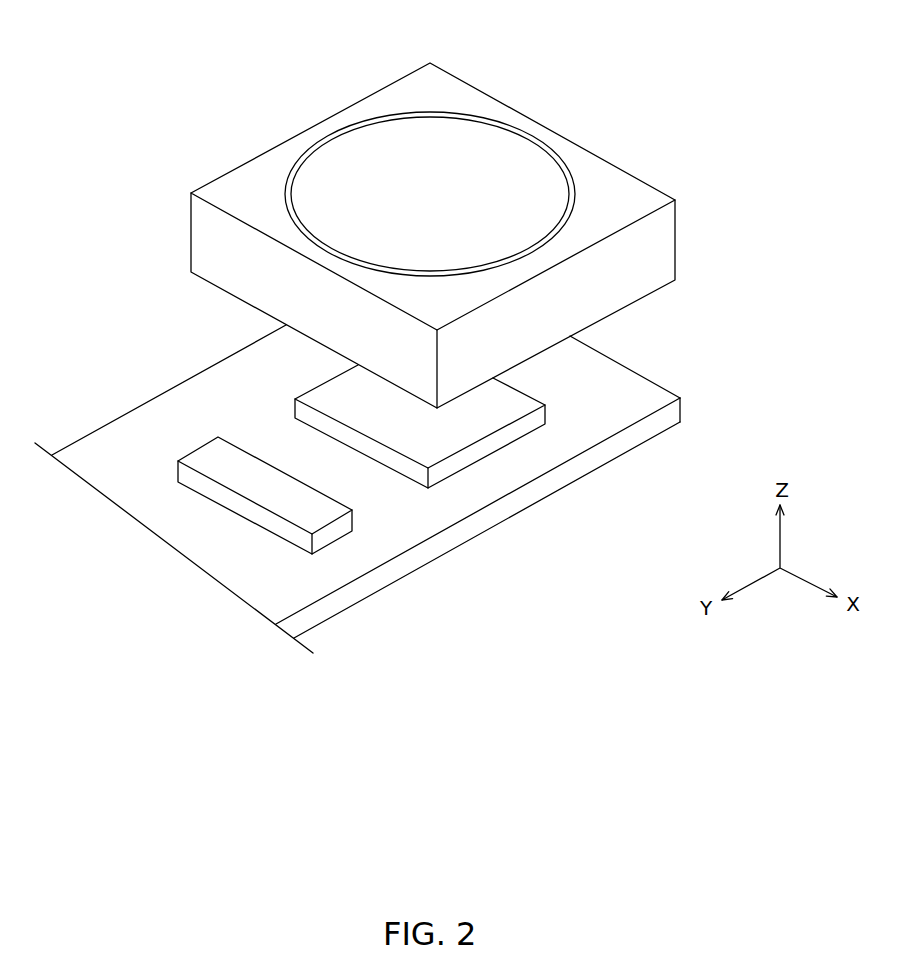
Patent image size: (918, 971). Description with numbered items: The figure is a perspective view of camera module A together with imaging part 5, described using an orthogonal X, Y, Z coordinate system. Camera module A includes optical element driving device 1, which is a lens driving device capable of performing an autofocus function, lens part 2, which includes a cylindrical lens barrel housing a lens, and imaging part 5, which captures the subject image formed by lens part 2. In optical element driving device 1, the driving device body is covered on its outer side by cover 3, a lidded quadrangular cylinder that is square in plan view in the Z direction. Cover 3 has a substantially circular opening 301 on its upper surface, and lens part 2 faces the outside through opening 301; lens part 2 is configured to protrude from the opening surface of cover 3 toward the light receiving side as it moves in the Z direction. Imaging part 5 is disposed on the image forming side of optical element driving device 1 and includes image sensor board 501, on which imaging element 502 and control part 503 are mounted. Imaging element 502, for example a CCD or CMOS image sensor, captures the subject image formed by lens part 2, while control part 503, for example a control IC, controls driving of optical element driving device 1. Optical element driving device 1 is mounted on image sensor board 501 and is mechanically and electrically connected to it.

The optical element driving device 1 is at (481, 213).
The lens part 2 is at (358, 190).
The cover 3 is at (676, 254).
The opening 301 is at (405, 153).
The imaging part 5 is at (389, 473).
The image sensor board 501 is at (613, 413).
The imaging element 502 is at (467, 435).
The control part 503 is at (317, 515).
The camera module A is at (572, 112).